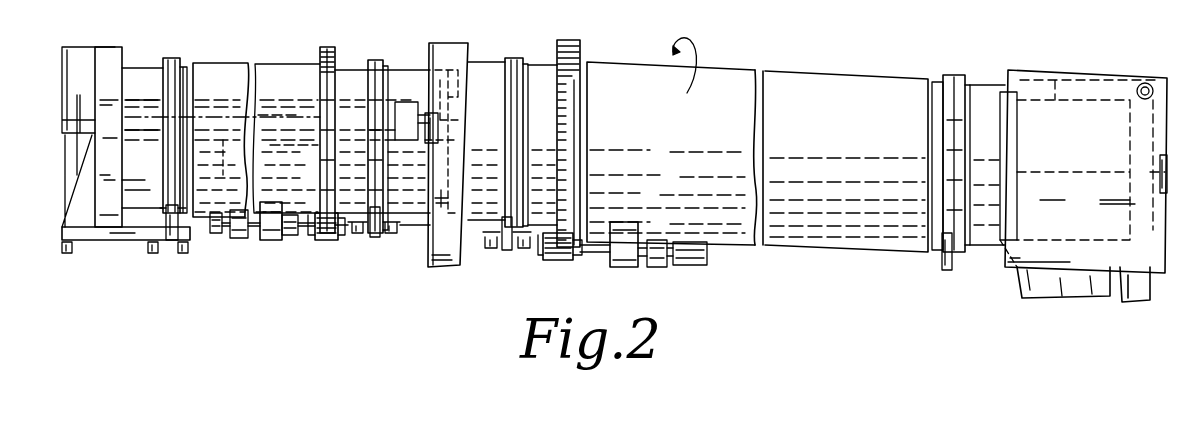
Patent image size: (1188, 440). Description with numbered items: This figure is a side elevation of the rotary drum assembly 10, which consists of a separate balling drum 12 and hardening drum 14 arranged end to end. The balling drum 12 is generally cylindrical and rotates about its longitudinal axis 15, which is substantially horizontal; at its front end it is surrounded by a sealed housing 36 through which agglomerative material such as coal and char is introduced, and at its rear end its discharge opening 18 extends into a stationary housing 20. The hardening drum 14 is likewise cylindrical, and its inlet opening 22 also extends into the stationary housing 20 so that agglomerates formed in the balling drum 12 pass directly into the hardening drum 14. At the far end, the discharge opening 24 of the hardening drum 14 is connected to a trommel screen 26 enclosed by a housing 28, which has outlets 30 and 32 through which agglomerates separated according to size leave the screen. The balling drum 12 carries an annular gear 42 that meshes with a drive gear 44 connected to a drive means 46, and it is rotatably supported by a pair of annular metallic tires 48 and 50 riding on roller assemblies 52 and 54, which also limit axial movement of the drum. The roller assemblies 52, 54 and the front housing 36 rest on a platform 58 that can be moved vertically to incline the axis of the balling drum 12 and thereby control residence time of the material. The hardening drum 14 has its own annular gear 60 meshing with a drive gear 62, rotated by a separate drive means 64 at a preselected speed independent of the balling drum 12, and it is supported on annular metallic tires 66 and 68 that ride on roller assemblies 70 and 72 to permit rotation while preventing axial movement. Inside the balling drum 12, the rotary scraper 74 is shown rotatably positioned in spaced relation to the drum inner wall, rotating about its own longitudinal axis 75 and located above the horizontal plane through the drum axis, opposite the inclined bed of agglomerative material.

The rotary drum assembly 10 is at (624, 55).
The balling drum 12 is at (228, 63).
The hardening drum 14 is at (778, 68).
The longitudinal axis 15 is at (223, 158).
The discharge opening 18 is at (449, 93).
The stationary housing 20 is at (455, 45).
The inlet opening 22 is at (447, 82).
The discharge opening 24 is at (1015, 147).
The trommel screen 26 is at (1058, 80).
The housing 28 is at (1118, 78).
The outlet 30 is at (1050, 295).
The outlet 32 is at (1133, 300).
The sealed housing 36 is at (95, 192).
The annular gear 42 is at (326, 47).
The drive gear 44 is at (330, 240).
The drive means 46 is at (275, 236).
The annular metallic tire 48 is at (376, 60).
The annular metallic tire 50 is at (170, 58).
The roller assembly 52 is at (375, 237).
The roller assembly 54 is at (172, 240).
The platform 58 is at (115, 240).
The annular gear 60 is at (578, 40).
The drive gear 62 is at (565, 260).
The drive means 64 is at (624, 267).
The annular metallic tire 66 is at (514, 58).
The annular metallic tire 68 is at (955, 75).
The roller assembly 70 is at (507, 250).
The roller assembly 72 is at (947, 270).
The rotary scraper 74 is at (296, 140).
The longitudinal axis 75 is at (262, 115).